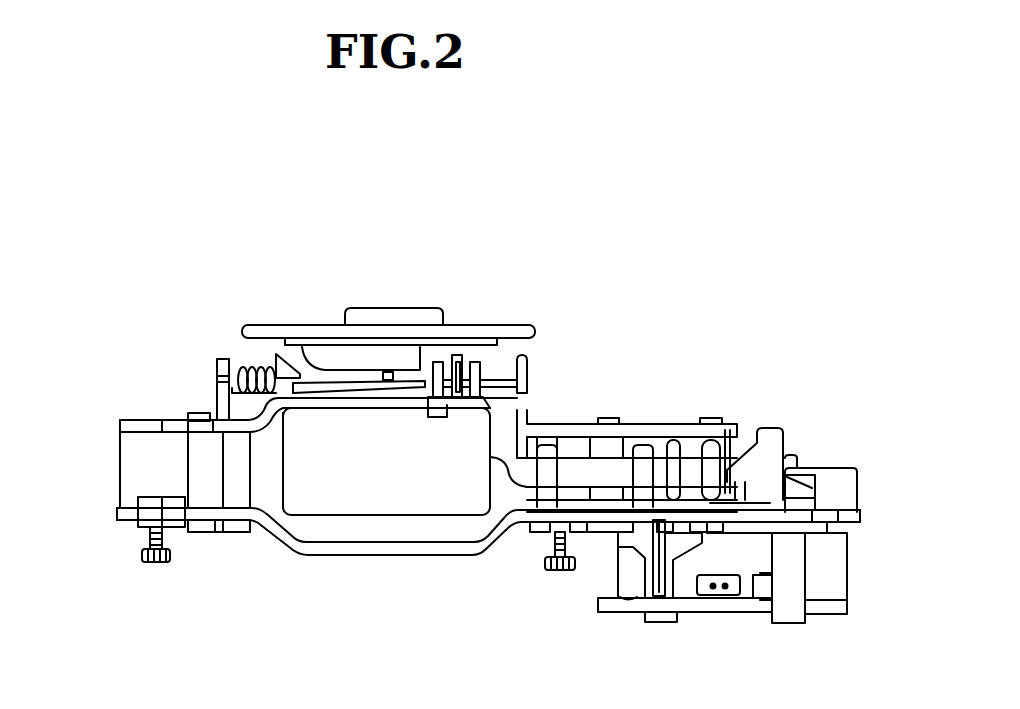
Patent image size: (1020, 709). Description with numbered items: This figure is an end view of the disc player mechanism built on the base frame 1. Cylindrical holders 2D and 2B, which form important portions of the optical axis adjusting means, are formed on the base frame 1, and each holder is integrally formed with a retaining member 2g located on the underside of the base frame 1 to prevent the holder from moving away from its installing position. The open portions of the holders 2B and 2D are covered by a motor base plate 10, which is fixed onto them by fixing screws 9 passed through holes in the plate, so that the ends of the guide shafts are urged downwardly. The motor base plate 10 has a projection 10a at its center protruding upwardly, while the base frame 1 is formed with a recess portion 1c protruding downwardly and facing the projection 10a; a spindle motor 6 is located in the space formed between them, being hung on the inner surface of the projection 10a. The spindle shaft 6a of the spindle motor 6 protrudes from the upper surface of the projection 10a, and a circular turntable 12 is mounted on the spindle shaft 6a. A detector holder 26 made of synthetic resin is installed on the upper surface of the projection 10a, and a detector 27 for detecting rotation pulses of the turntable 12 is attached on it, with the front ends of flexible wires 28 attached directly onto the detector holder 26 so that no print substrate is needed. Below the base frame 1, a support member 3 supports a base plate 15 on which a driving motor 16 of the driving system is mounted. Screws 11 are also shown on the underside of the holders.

The base frame 1 is at (507, 532).
The recess portion 1c is at (320, 553).
The cylindrical holder 2D is at (140, 464).
The cylindrical holder 2B is at (580, 424).
The retaining member 2g is at (233, 532).
The support member 3 is at (662, 592).
The spindle motor 6 is at (370, 502).
The spindle shaft 6a is at (393, 376).
The fixing screw 9 is at (198, 413).
The motor base plate 10 is at (680, 423).
The projection 10a is at (357, 406).
The bolt 11 is at (155, 565).
The turntable 12 is at (517, 330).
The base plate 15 is at (730, 607).
The driving motor 16 is at (833, 560).
The detector holder 26 is at (460, 362).
The detector 27 is at (487, 372).
The flexible wires 28 is at (503, 458).